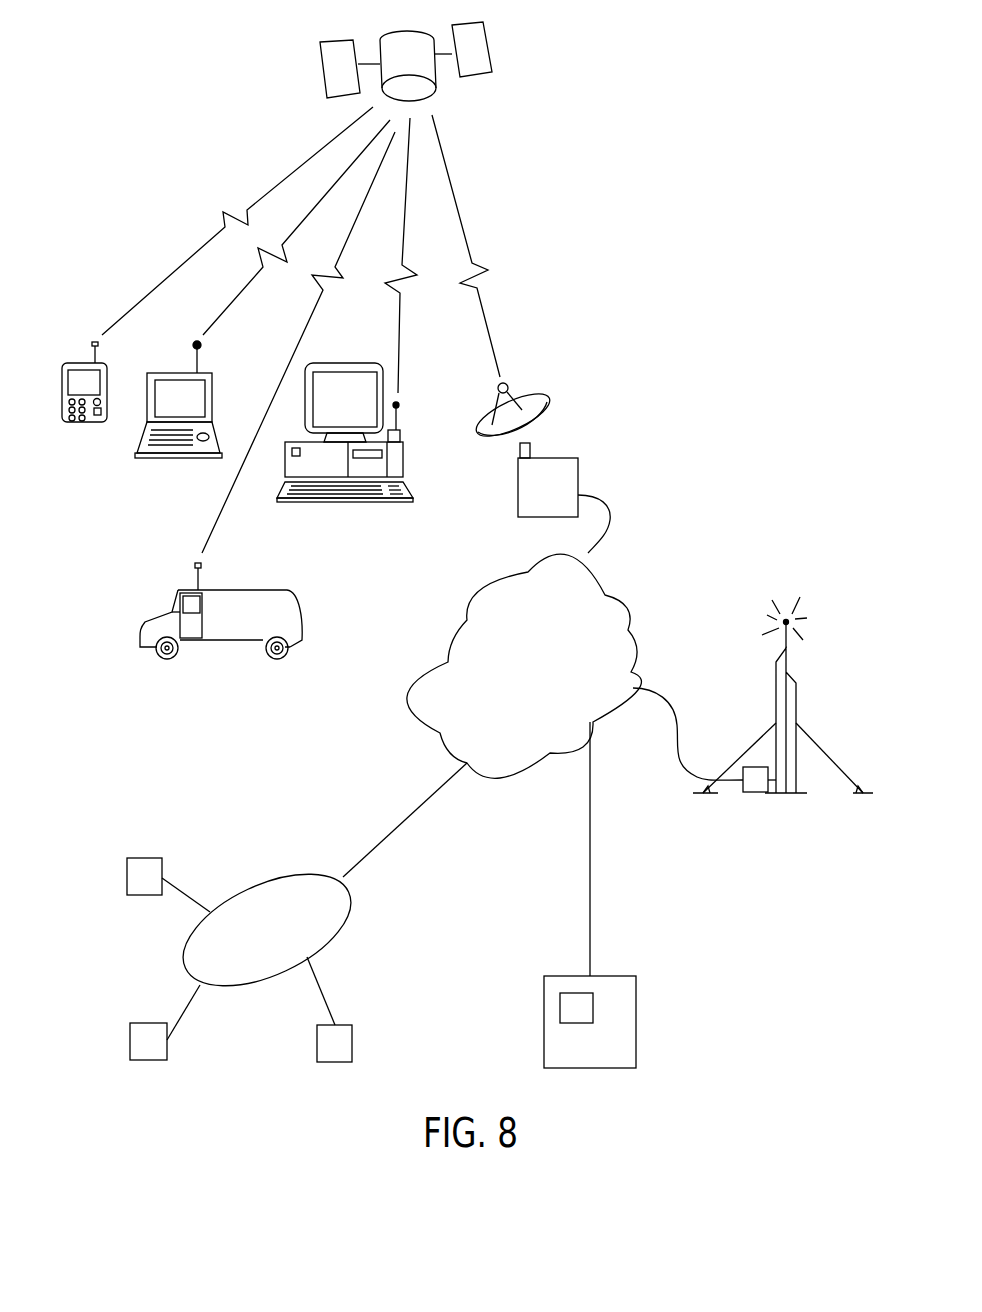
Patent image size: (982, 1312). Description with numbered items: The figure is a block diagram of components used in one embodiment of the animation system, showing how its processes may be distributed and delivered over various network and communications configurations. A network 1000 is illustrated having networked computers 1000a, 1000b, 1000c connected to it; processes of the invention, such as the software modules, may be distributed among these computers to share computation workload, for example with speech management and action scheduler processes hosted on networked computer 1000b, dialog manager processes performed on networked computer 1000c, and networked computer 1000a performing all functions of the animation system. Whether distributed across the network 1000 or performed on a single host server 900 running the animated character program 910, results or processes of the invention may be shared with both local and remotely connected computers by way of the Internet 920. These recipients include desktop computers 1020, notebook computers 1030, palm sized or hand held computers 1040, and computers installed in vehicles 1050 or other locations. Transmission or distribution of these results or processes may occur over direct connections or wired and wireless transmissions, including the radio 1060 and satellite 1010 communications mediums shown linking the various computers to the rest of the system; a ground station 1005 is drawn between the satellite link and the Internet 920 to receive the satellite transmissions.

The satellite 1010 is at (397, 47).
The palm sized or hand held computer 1040 is at (85, 424).
The notebook computer 1030 is at (175, 458).
The desktop computer 1020 is at (348, 502).
The satellite receiver station 1005 is at (565, 477).
The vehicle 1050 is at (230, 648).
The Internet 920 is at (557, 694).
The radio 1060 is at (755, 792).
The network 1000 is at (287, 958).
The networked computer 1000a is at (340, 1042).
The networked computer 1000b is at (138, 1040).
The networked computer 1000c is at (138, 873).
The host server 900 is at (589, 1022).
The animated character program 910 is at (573, 1010).